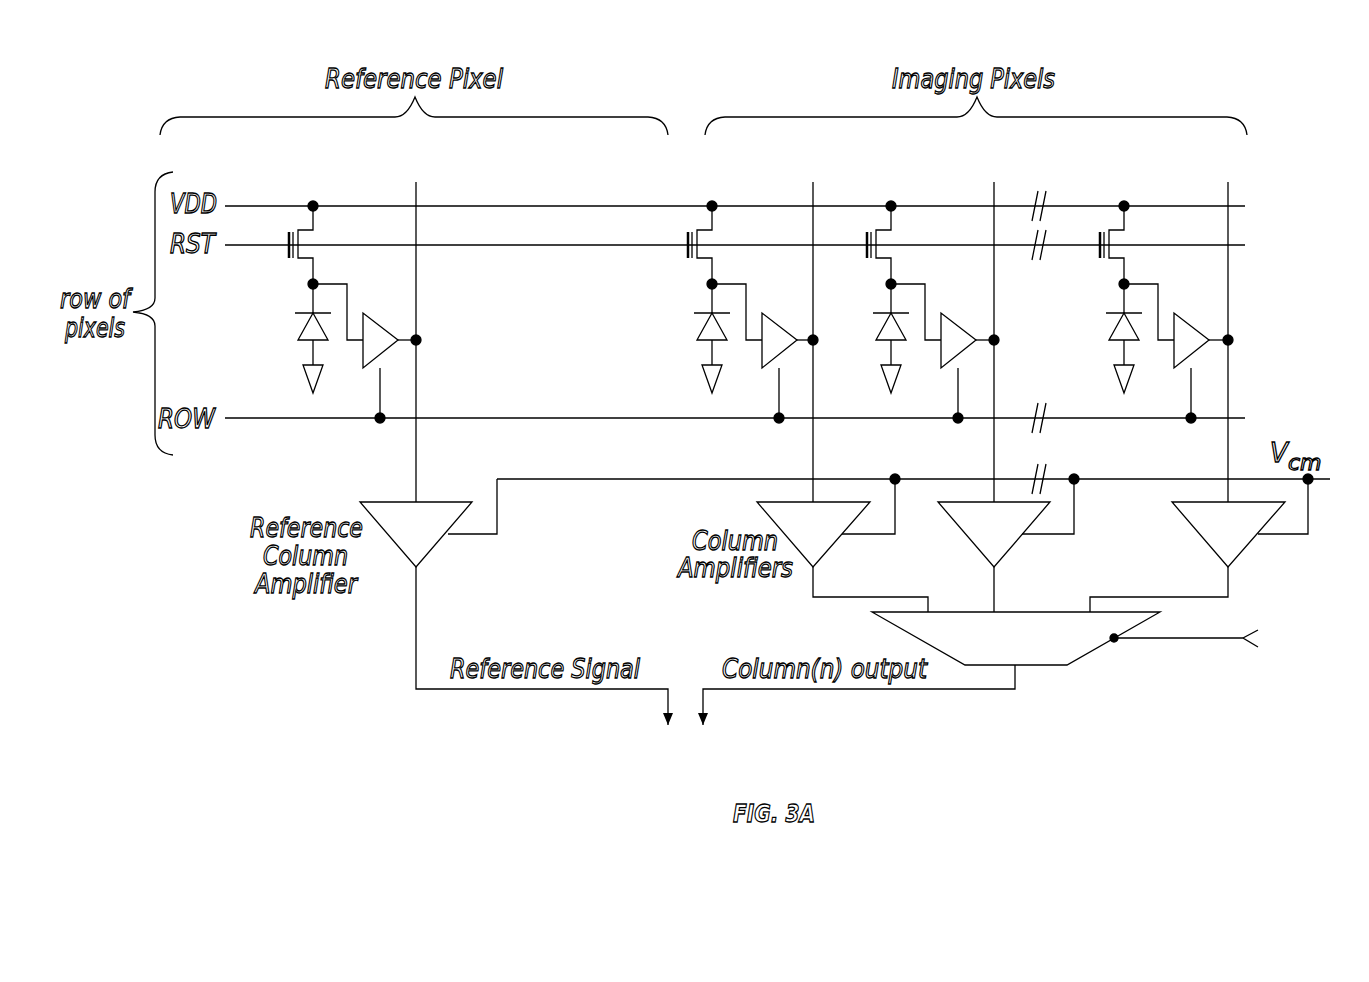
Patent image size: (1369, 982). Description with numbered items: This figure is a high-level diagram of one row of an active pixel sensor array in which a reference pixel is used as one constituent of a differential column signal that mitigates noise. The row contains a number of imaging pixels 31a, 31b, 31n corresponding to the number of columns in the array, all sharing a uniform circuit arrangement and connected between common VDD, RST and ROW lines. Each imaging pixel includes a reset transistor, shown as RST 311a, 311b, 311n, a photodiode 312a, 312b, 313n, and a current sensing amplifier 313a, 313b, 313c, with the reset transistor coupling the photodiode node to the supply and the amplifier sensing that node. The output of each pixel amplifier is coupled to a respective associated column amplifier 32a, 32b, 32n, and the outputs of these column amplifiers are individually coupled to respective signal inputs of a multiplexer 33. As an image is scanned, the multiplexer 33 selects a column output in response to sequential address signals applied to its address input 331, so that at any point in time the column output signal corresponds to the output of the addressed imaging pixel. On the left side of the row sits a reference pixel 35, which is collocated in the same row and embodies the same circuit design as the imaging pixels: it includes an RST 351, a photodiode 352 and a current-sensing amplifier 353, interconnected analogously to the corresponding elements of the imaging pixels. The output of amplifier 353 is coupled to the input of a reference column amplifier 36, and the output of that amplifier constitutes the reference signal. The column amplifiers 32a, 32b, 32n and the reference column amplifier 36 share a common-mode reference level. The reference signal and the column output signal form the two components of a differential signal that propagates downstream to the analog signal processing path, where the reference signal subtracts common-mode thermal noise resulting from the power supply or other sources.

The reference pixel 35 is at (326, 279).
The RST 351 is at (315, 216).
The photodiode 352 is at (304, 342).
The current-sensing amplifier 353 is at (388, 323).
The imaging pixel 31a is at (717, 279).
The RST 311a is at (714, 216).
The photodiode 312a is at (702, 342).
The current sensing amplifier 313a is at (785, 323).
The imaging pixel 31b is at (909, 279).
The RST 311b is at (893, 216).
The photodiode 312b is at (877, 341).
The current sensing amplifier 313b is at (965, 328).
The imaging pixel 31n is at (1130, 279).
The RST 311n is at (1126, 216).
The photodiode 313n is at (1112, 342).
The current sensing amplifier 313c is at (1198, 328).
The reference column amplifier 36 is at (435, 548).
The column amplifier 32a is at (830, 547).
The column amplifier 32b is at (1010, 548).
The column amplifier 32n is at (1245, 548).
The multiplexer 33 is at (980, 668).
The address input 331 is at (1116, 640).